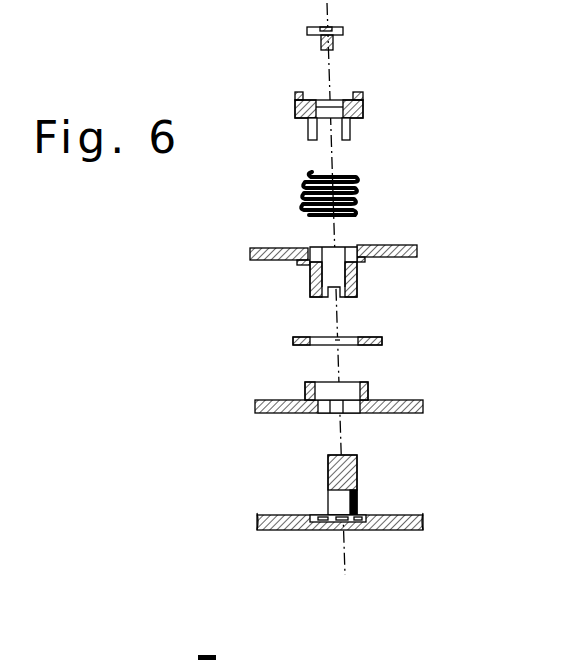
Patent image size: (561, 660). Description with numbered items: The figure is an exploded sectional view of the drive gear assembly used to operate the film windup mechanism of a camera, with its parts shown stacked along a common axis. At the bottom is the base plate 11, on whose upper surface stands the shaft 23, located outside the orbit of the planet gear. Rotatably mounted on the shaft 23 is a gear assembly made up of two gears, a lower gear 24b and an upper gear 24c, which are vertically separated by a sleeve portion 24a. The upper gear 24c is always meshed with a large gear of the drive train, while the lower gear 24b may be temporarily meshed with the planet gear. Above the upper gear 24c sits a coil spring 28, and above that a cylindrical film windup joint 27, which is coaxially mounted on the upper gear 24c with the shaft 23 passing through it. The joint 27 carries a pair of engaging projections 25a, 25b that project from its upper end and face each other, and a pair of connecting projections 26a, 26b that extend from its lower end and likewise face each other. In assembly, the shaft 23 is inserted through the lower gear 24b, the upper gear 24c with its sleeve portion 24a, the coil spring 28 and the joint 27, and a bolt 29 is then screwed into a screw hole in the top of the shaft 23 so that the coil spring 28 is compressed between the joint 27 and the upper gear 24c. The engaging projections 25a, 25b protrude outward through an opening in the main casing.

The base plate 11 is at (405, 514).
The shaft 23 is at (357, 475).
The sleeve portion 24a is at (358, 285).
The lower gear 24b is at (403, 399).
The upper gear 24c is at (400, 245).
The engaging projection 25a is at (297, 93).
The engaging projection 25b is at (375, 82).
The connecting projection 26a is at (309, 140).
The connecting projection 26b is at (350, 139).
The cylindrical film windup joint 27 is at (336, 119).
The coil spring 28 is at (360, 203).
The bolt 29 is at (344, 31).